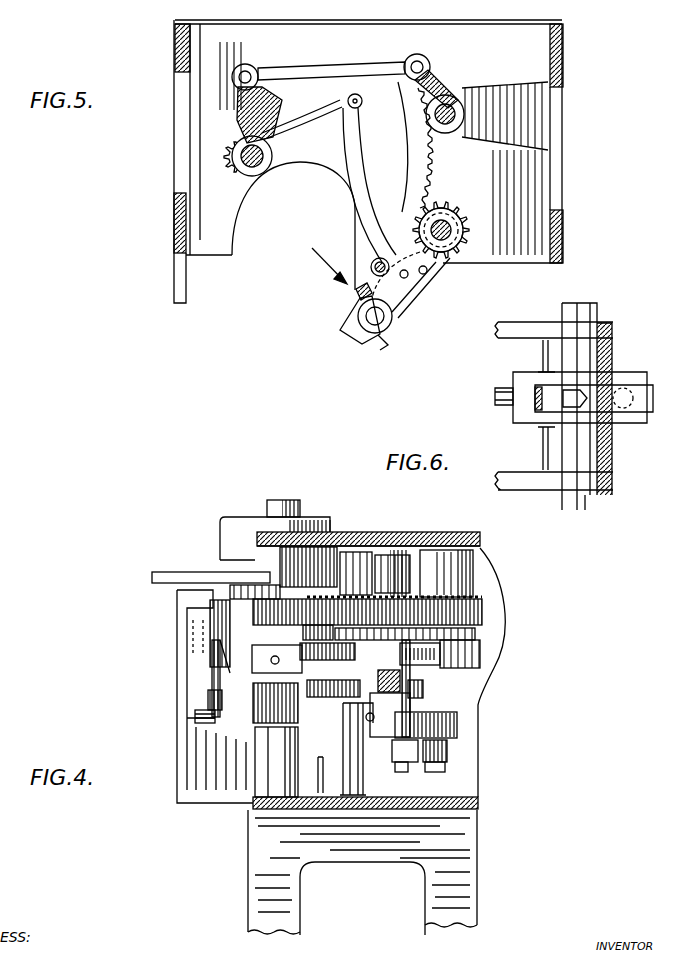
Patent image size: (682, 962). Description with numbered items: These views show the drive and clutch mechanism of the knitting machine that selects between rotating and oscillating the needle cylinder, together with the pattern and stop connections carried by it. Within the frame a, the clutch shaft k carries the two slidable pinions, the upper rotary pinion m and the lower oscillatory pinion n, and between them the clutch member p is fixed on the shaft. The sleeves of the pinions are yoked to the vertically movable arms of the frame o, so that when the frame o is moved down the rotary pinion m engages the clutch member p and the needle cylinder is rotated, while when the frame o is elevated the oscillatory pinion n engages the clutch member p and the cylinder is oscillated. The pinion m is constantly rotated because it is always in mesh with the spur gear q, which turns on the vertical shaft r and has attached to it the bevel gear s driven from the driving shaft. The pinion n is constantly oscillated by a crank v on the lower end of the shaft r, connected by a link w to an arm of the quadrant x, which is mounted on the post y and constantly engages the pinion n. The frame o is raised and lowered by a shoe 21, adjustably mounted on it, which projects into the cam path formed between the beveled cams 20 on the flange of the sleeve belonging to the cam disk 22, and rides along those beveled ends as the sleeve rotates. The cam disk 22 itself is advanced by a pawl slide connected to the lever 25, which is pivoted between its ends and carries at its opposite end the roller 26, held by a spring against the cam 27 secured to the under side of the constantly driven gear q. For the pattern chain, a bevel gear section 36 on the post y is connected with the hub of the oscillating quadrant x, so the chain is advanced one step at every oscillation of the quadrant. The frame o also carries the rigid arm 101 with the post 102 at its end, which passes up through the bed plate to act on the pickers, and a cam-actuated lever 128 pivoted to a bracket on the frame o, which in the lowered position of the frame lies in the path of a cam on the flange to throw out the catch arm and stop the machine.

In FIG. 5, the frame a is at (563, 118).
In FIG. 4, the frame a is at (478, 818).
In FIG. 5, the link w is at (347, 66).
In FIG. 4, the link w is at (455, 752).
In FIG. 5, the crank v is at (422, 98).
In FIG. 4, the crank v is at (460, 725).
In FIG. 5, the vertical shaft r is at (452, 105).
In FIG. 4, the vertical shaft r is at (388, 560).
In FIG. 5, the post 102 is at (361, 107).
In FIG. 5, the quadrant x is at (434, 168).
In FIG. 4, the quadrant x is at (355, 690).
In FIG. 5, the bevel gear section 36 is at (222, 163).
In FIG. 4, the bevel gear section 36 is at (365, 788).
In FIG. 5, the post y is at (258, 173).
In FIG. 4, the post y is at (326, 757).
In FIG. 5, the rigid arm 101 is at (345, 185).
In FIG. 4, the rigid arm 101 is at (366, 560).
In FIG. 5, the oscillatory pinion n is at (460, 211).
In FIG. 4, the oscillatory pinion n is at (200, 717).
In FIG. 5, the rotary pinion m is at (465, 230).
In FIG. 4, the rotary pinion m is at (253, 600).
In FIG. 5, the clutch shaft k is at (448, 243).
In FIG. 4, the clutch shaft k is at (282, 578).
In FIG. 5, the shoe 21 is at (357, 297).
In FIG. 6, the shoe 21 is at (582, 394).
In FIG. 5, the frame o is at (392, 330).
In FIG. 6, the frame o is at (610, 462).
In FIG. 4, the frame o is at (178, 606).
In FIG. 4, the cams 20 is at (352, 532).
In FIG. 4, the cam disk 22 is at (205, 575).
In FIG. 4, the bevel gear s is at (467, 596).
In FIG. 4, the spur gear q is at (483, 619).
In FIG. 4, the roller 26 is at (480, 640).
In FIG. 4, the lever 25 is at (478, 657).
In FIG. 4, the cam 27 is at (437, 655).
In FIG. 4, the cam-actuated lever 128 is at (218, 663).
In FIG. 4, the clutch member p is at (275, 660).